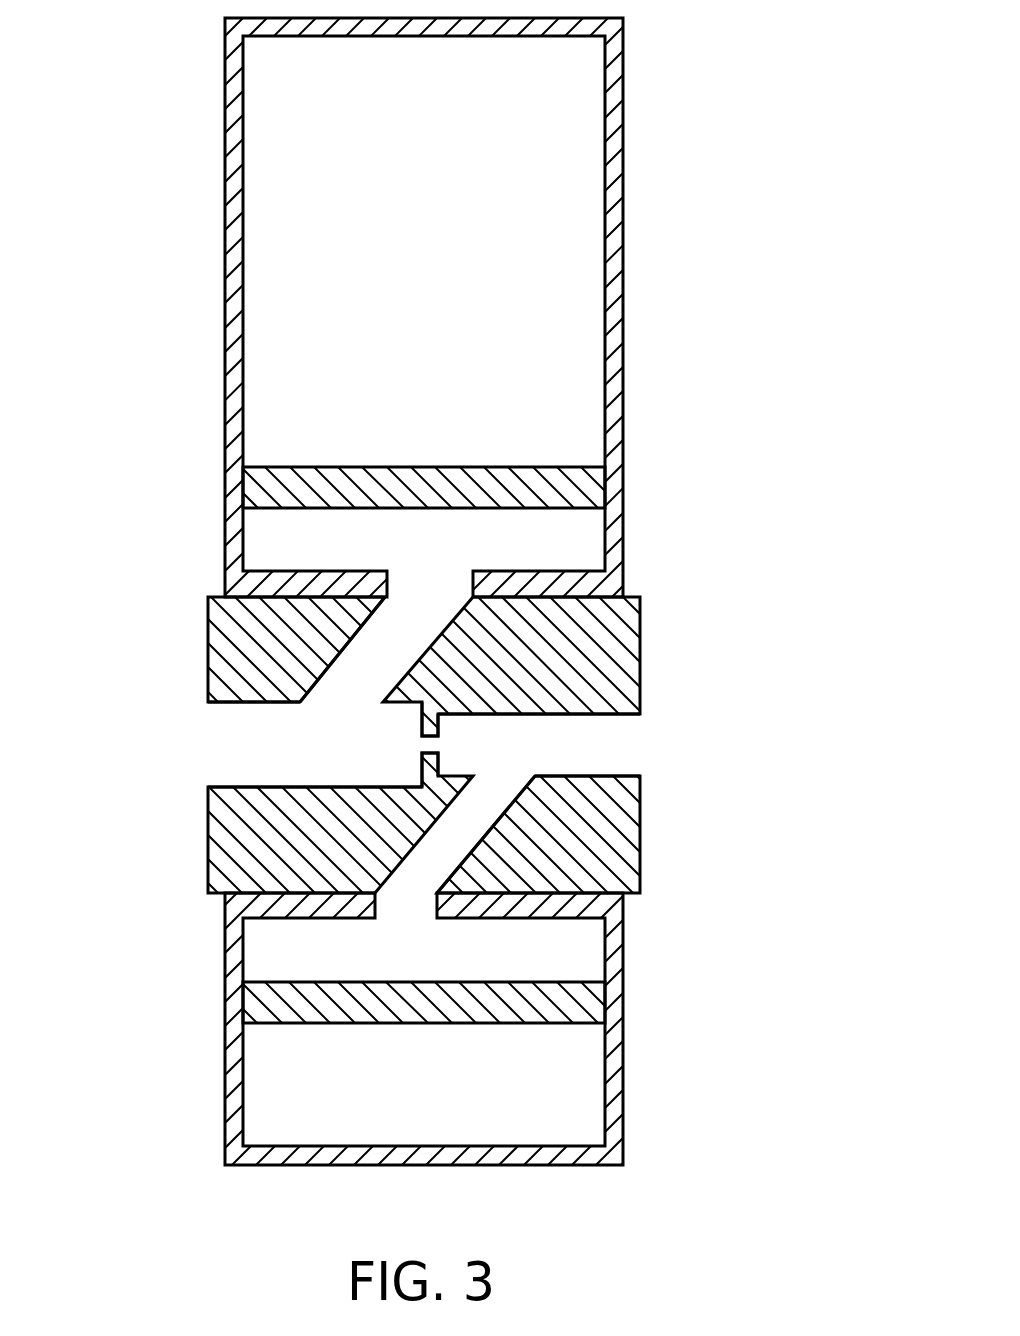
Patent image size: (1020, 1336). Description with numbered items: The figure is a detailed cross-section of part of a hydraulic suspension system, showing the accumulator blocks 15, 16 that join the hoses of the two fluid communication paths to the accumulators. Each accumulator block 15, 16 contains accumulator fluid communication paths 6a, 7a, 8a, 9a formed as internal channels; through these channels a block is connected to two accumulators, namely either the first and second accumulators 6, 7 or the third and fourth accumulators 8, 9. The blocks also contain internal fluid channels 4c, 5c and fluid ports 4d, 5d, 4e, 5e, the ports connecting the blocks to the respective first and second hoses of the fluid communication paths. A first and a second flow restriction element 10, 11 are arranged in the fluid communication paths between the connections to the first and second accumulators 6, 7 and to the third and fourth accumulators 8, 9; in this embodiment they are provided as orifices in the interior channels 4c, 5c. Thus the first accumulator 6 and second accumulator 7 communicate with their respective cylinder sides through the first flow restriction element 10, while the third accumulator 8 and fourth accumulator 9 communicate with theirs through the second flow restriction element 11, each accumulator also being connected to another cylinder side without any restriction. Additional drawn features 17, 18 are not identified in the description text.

The first accumulator 6 is at (510, 307).
The third accumulator 8 is at (623, 258).
The second accumulator 7 is at (446, 1029).
The fourth accumulator 9 is at (623, 1038).
The accumulator block 15 is at (459, 663).
The accumulator block 16 is at (640, 648).
The lower engaging member 17 is at (416, 823).
The lower engaging member 18 is at (416, 823).
The accumulator fluid communication path 6a is at (208, 649).
The accumulator fluid communication path 8a is at (385, 650).
The accumulator fluid communication path 7a is at (625, 834).
The accumulator fluid communication path 9a is at (453, 833).
The first flow restriction element 10 is at (243, 722).
The second flow restriction element 11 is at (425, 745).
The internal fluid channel 4c is at (624, 701).
The internal fluid channel 5c is at (592, 745).
The fluid port 4d is at (229, 744).
The fluid port 5d is at (208, 758).
The fluid port 4e is at (672, 741).
The fluid port 5e is at (638, 758).